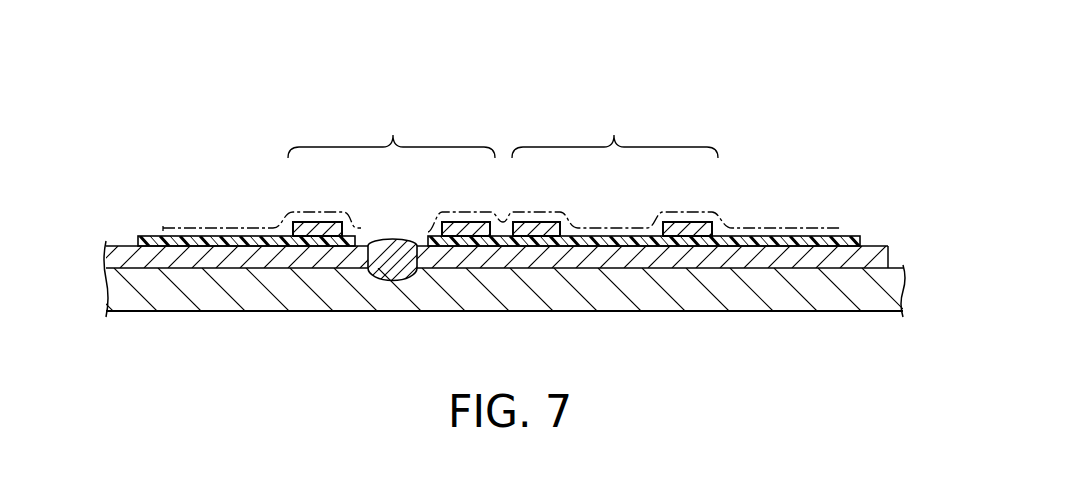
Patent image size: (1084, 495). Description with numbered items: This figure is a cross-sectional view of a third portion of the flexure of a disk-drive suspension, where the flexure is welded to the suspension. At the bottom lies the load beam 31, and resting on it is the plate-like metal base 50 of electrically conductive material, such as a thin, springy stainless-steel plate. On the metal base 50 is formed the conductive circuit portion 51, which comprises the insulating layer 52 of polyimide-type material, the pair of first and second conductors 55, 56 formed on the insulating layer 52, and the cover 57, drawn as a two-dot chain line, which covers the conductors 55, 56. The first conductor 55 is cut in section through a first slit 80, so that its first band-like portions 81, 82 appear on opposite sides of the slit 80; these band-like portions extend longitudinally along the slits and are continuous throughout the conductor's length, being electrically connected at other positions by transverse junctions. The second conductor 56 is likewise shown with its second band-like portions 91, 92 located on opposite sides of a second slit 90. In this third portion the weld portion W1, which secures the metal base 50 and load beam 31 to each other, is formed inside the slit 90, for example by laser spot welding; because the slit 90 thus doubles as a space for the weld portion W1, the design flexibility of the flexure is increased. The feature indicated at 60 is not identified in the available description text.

The load beam 31 is at (608, 311).
The metal base 50 is at (494, 268).
The insulating layer 52 is at (193, 235).
The first conductor 55 is at (615, 133).
The second conductor 56 is at (391, 131).
The cover 57 is at (716, 216).
The sensor element 60 is at (505, 130).
The conductive circuit portion 51 is at (730, 172).
The first slit 80 is at (618, 228).
The first band-like portion 81 is at (692, 222).
The first band-like portion 82 is at (535, 222).
The second slit 90 is at (373, 238).
The second band-like portion 91 is at (467, 222).
The second band-like portion 92 is at (316, 222).
The weld portion W1 is at (402, 238).